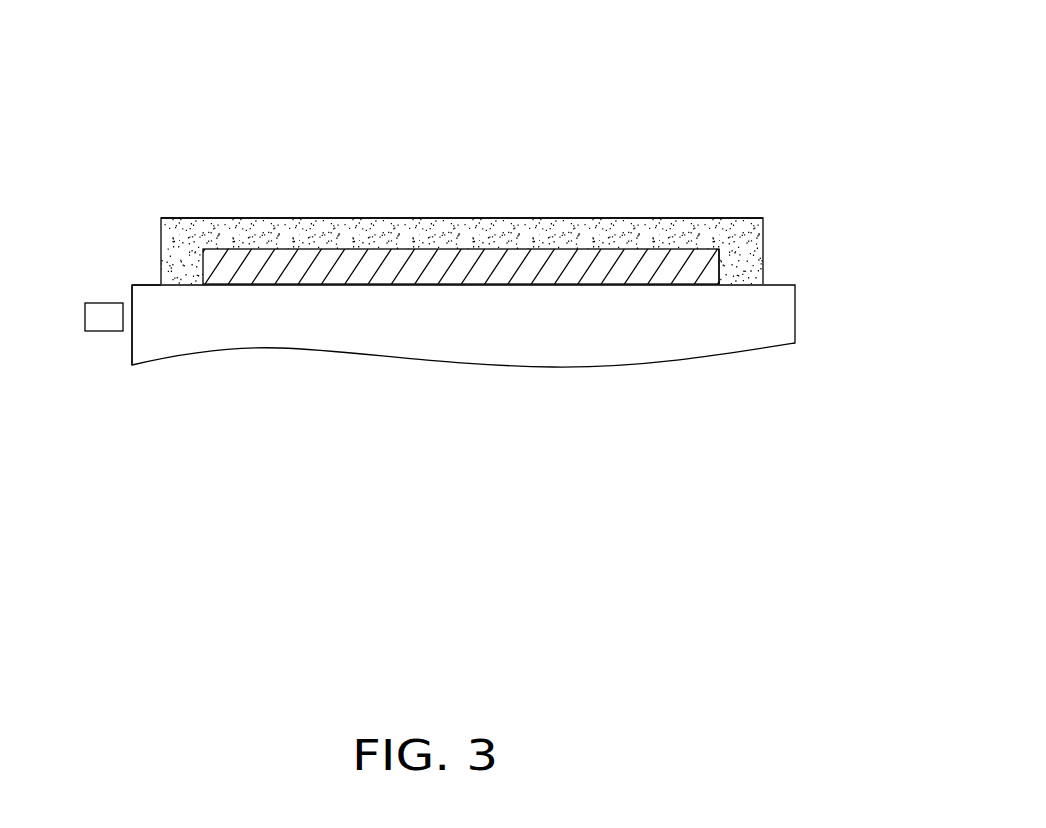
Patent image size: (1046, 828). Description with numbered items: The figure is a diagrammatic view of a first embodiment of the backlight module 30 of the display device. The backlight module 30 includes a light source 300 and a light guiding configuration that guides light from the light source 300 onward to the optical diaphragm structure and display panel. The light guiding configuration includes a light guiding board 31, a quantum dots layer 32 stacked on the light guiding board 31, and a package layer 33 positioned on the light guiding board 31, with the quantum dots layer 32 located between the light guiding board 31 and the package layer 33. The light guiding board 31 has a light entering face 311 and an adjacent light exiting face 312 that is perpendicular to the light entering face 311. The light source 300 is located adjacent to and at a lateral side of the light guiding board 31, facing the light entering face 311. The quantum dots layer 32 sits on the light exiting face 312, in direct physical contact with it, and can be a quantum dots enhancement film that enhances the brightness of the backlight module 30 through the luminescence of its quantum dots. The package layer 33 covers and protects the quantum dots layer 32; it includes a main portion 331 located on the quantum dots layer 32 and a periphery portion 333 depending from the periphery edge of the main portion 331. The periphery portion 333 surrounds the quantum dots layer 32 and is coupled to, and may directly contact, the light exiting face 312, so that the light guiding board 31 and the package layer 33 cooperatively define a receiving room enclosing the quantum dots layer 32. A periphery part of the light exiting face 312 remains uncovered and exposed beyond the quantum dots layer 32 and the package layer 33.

The backlight module 30 is at (383, 40).
The light guiding board 31 is at (795, 317).
The light entering face 311 is at (128, 295).
The light exiting face 312 is at (146, 281).
The light source 300 is at (104, 331).
The quantum dots layer 32 is at (722, 257).
The package layer 33 is at (628, 218).
The main portion 331 is at (473, 228).
The periphery portion 333 is at (750, 270).